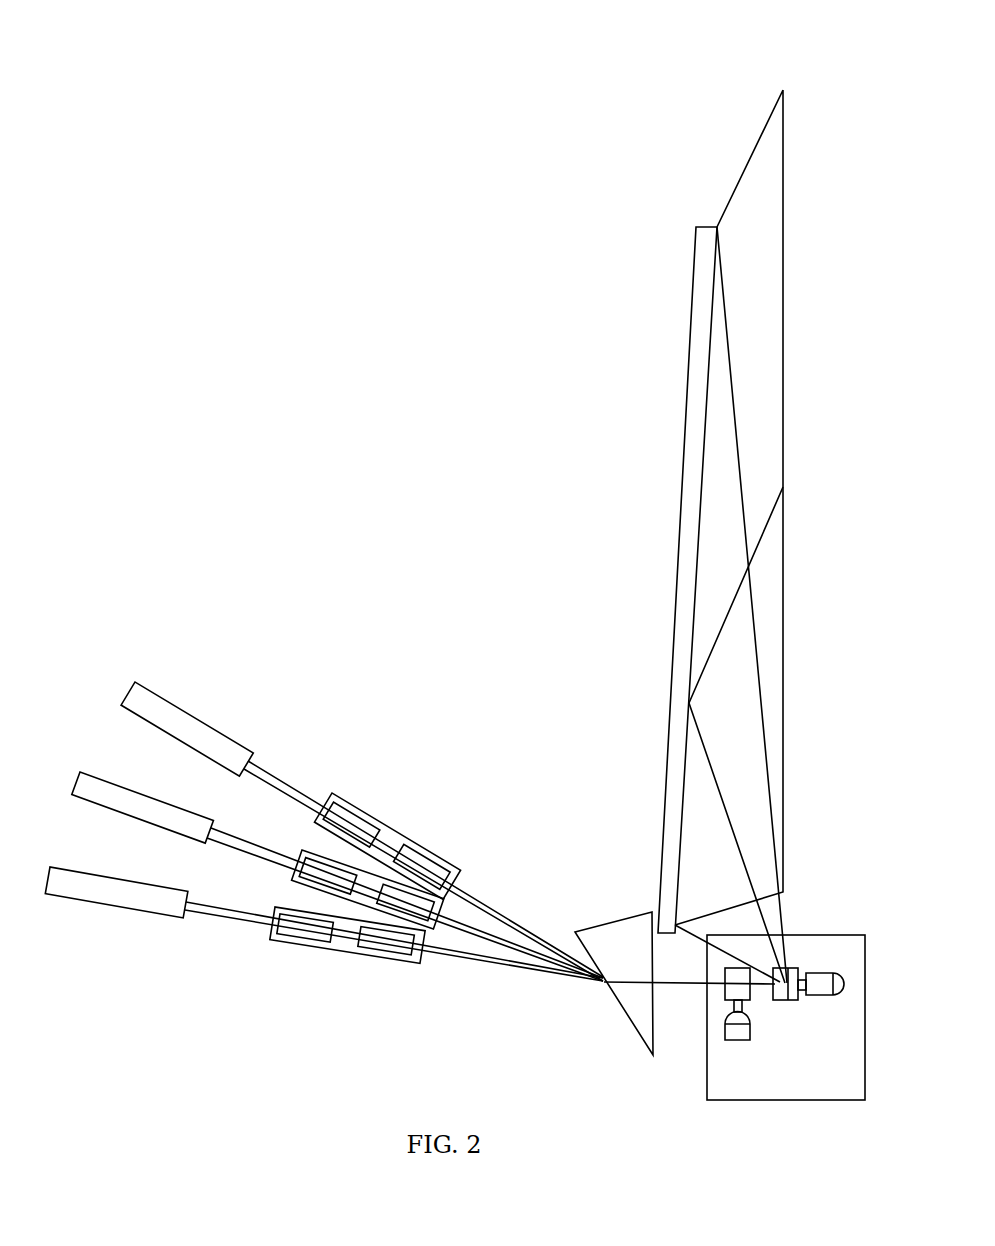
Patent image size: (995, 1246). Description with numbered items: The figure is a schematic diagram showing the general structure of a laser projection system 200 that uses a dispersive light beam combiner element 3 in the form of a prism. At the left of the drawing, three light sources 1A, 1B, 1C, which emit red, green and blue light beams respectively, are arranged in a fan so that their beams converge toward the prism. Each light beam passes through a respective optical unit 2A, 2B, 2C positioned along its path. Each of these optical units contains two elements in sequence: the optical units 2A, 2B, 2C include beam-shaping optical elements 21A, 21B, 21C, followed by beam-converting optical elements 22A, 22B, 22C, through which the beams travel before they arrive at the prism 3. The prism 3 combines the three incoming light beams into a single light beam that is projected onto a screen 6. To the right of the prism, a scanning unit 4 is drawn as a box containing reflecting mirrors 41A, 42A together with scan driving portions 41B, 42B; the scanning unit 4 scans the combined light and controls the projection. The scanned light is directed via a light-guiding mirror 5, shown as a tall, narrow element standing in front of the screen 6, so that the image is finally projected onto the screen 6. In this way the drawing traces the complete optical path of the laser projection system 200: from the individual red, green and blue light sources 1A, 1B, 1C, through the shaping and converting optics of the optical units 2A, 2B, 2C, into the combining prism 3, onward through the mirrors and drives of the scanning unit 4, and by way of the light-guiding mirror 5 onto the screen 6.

The laser projection system 200 is at (510, 88).
The light source 1A is at (206, 719).
The light source 1B is at (97, 776).
The light source 1C is at (113, 877).
The optical unit 2A is at (462, 881).
The optical unit 2B is at (440, 912).
The optical unit 2C is at (422, 964).
The beam-shaping optical element 21A is at (366, 816).
The beam-converting optical element 22A is at (426, 852).
The beam-shaping optical element 21B is at (313, 888).
The beam-converting optical element 22B is at (427, 923).
The beam-shaping optical element 21C is at (308, 942).
The beam-converting optical element 22C is at (381, 955).
The dispersive light beam combiner element 3 is at (610, 920).
The scanning unit 4 is at (833, 935).
The light-guiding mirror 5 is at (686, 413).
The screen 6 is at (786, 412).
The reflecting mirror 41A is at (752, 1000).
The scan driving portion 41B is at (738, 1041).
The reflecting mirror 42A is at (792, 968).
The scan driving portion 42B is at (815, 996).